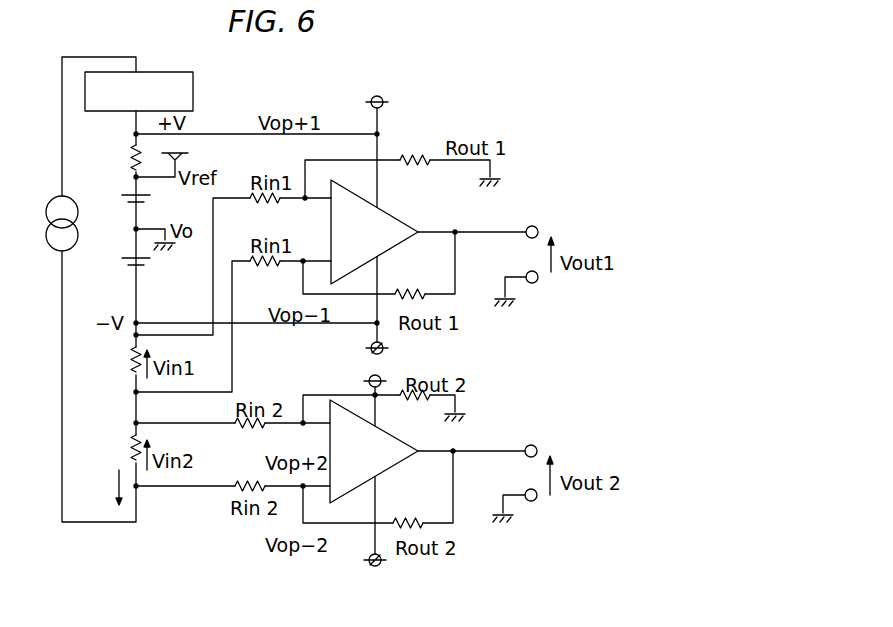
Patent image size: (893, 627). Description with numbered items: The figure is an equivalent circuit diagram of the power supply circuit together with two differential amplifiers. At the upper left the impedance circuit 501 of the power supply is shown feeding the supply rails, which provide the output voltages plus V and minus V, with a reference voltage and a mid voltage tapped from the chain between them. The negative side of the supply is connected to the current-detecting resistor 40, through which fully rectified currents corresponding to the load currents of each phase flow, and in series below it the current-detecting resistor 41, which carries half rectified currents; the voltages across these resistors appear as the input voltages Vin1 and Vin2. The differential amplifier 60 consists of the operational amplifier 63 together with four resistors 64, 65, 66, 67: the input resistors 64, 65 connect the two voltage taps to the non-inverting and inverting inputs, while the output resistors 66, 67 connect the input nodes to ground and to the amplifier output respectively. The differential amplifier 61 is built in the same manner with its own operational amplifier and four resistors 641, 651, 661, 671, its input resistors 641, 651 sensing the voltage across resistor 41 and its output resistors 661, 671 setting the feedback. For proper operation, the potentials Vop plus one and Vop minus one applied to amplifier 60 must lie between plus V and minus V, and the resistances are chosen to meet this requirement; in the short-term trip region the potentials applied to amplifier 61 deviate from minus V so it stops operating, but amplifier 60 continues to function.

The impedance circuit 501 is at (193, 88).
The current-detecting resistor 40 is at (128, 362).
The current-detecting resistor 41 is at (128, 447).
The differential amplifier 60 is at (382, 190).
The differential amplifier 61 is at (356, 494).
The operational amplifier 63 is at (357, 194).
The resistor 64 is at (274, 205).
The resistor 65 is at (270, 269).
The resistor 66 is at (417, 157).
The resistor 67 is at (410, 291).
The resistor 641 is at (248, 432).
The resistor 651 is at (248, 479).
The resistor 661 is at (419, 409).
The resistor 671 is at (410, 518).